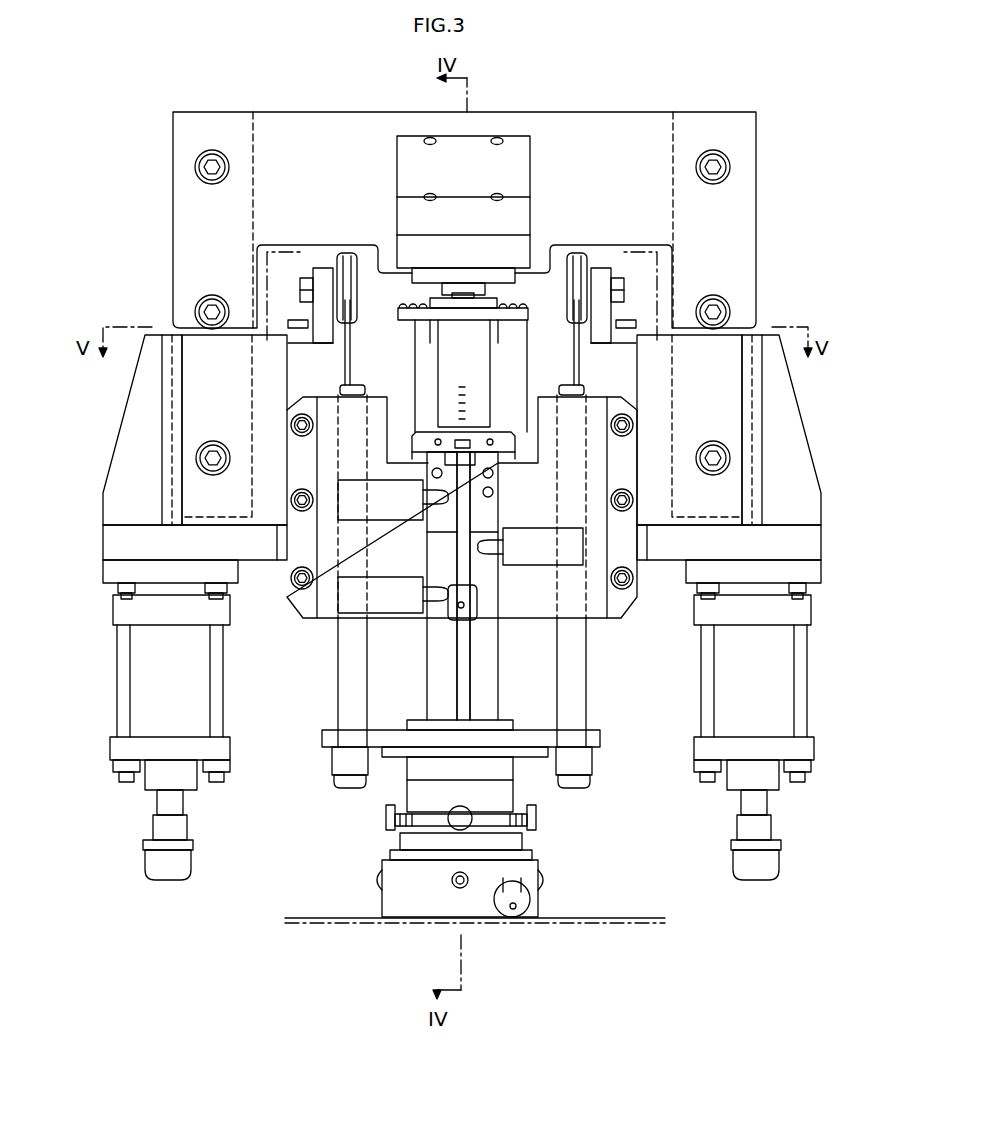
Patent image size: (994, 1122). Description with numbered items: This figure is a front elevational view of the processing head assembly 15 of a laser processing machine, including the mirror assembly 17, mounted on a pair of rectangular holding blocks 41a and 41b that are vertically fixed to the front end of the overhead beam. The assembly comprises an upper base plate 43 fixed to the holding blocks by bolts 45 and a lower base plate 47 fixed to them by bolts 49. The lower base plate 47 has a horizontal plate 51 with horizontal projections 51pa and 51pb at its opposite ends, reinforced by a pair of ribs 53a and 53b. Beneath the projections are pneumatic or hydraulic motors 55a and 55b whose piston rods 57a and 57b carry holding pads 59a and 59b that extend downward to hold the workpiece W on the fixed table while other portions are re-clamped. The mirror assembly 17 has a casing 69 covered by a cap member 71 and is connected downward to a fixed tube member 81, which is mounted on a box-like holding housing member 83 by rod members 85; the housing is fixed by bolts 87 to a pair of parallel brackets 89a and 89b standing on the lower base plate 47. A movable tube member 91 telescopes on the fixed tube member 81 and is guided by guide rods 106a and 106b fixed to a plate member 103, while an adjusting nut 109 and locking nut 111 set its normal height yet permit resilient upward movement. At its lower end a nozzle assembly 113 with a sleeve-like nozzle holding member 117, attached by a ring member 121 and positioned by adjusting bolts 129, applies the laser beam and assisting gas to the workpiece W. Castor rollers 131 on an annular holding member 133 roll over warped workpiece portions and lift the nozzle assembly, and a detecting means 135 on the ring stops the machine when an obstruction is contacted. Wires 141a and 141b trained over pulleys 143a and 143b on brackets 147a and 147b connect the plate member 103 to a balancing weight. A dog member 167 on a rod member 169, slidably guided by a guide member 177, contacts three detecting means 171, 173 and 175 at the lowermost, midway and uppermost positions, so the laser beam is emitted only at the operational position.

The processing head assembly 15 is at (604, 107).
The mirror assembly 17 is at (511, 130).
The holding block 41a is at (670, 150).
The holding block 41b is at (256, 166).
The upper base plate 43 is at (325, 123).
The bolts 45 is at (205, 170).
The lower base plate 47 is at (145, 388).
The bolts 49 is at (200, 458).
The horizontal plate 51 is at (772, 525).
The horizontal projection 51pa is at (815, 548).
The horizontal projection 51pb is at (110, 545).
The rib 53a is at (762, 416).
The rib 53b is at (162, 413).
The pneumatic or hydraulic motor 55a is at (790, 692).
The pneumatic or hydraulic motor 55b is at (137, 692).
The piston rod 57a is at (766, 810).
The piston rod 57b is at (158, 812).
The holding pad 59a is at (772, 862).
The holding pad 59b is at (150, 862).
The casing 69 is at (525, 247).
The cap member 71 is at (528, 160).
The fixed tube member 81 is at (471, 376).
The holding housing member 83 is at (525, 612).
The rod members 85 is at (406, 329).
The bolts 87 is at (292, 588).
The bracket 89a is at (637, 381).
The bracket 89b is at (297, 367).
The movable tube member 91 is at (496, 686).
The plate member 103 is at (598, 740).
The guide rod 106a is at (586, 694).
The guide rod 106b is at (338, 693).
The adjusting nut 109 is at (498, 460).
The locking nut 111 is at (500, 436).
The nozzle assembly 113 is at (360, 890).
The sleeve-like nozzle holding member 117 is at (508, 790).
The ring member 121 is at (460, 766).
The adjusting bolts 129 is at (386, 810).
The castor rollers 131 is at (514, 920).
The annular holding member 133 is at (392, 857).
The detecting means 135 is at (412, 912).
The wire 141a is at (582, 350).
The wire 141b is at (349, 350).
The pulley 143a is at (587, 262).
The pulley 143b is at (346, 262).
The bracket 147a is at (608, 270).
The bracket 147b is at (325, 270).
The dog member 167 is at (450, 626).
The rod member 169 is at (457, 681).
The detecting means 171 is at (393, 595).
The detecting means 173 is at (530, 546).
The detecting means 175 is at (393, 500).
The guide member 177 is at (460, 462).
The workpiece W is at (636, 926).